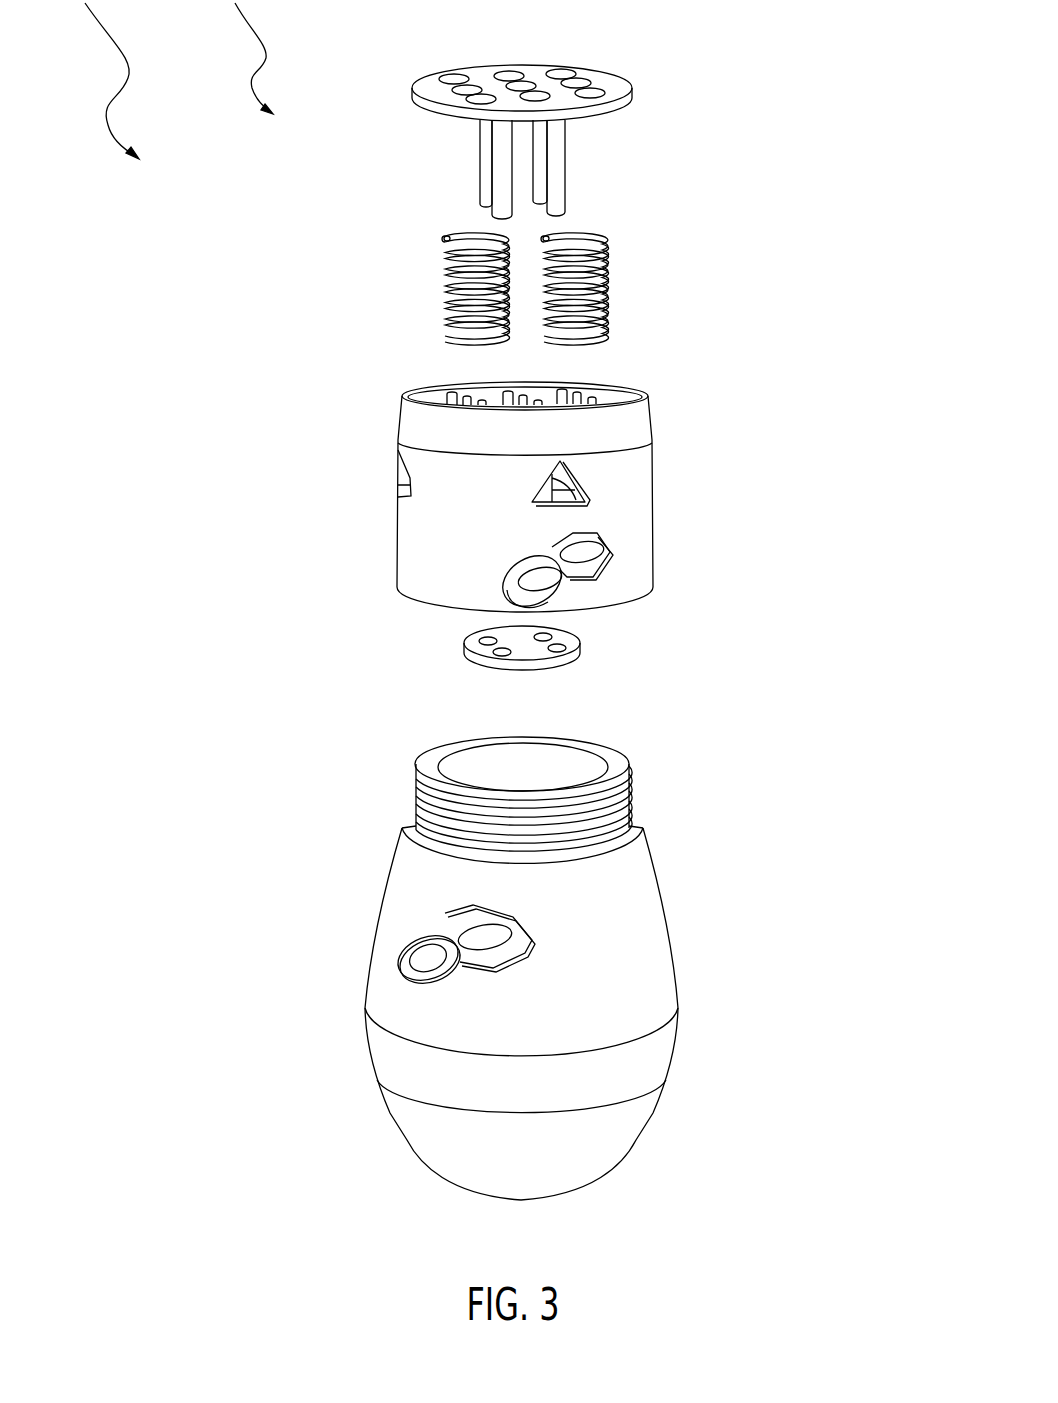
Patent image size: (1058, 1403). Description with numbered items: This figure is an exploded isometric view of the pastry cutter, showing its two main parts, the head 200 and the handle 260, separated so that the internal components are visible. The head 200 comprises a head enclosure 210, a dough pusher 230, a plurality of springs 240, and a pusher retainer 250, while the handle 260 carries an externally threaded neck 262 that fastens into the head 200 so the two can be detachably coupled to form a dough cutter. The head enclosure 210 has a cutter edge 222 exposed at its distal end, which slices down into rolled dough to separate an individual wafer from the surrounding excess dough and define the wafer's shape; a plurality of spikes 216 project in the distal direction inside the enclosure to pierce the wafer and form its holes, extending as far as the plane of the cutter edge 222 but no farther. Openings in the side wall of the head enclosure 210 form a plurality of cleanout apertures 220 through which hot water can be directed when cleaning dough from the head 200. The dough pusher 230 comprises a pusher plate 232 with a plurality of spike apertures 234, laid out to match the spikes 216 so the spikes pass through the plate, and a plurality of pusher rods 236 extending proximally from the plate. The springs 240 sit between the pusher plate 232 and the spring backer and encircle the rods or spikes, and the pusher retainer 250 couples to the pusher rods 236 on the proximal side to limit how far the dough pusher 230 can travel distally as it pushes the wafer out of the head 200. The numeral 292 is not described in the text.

The head 200 is at (824, 62).
The head enclosure 210 is at (412, 553).
The plurality of spikes 216 is at (582, 397).
The plurality of cleanout apertures 220 is at (585, 491).
The cutter edge 222 is at (403, 398).
The dough pusher 230 is at (370, 65).
The pusher plate 232 is at (628, 82).
The plurality of spike apertures 234 is at (523, 88).
The plurality of pusher rods 236 is at (555, 168).
The plurality of springs 240 is at (370, 250).
The pusher retainer 250 is at (582, 643).
The handle 260 is at (824, 678).
The externally threaded neck 262 is at (422, 793).
The container body 292 is at (245, 1206).